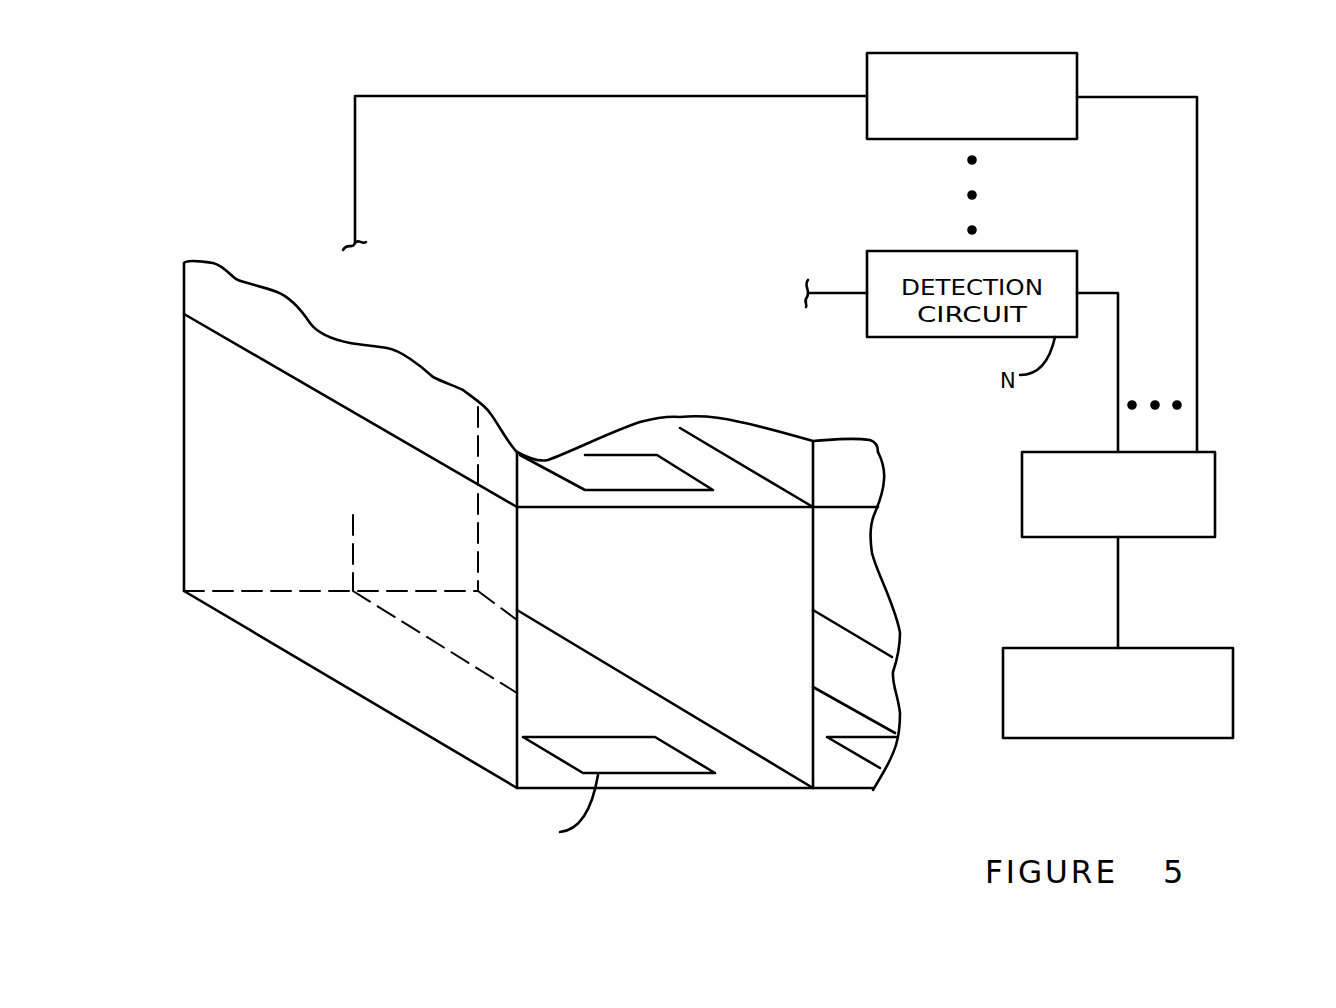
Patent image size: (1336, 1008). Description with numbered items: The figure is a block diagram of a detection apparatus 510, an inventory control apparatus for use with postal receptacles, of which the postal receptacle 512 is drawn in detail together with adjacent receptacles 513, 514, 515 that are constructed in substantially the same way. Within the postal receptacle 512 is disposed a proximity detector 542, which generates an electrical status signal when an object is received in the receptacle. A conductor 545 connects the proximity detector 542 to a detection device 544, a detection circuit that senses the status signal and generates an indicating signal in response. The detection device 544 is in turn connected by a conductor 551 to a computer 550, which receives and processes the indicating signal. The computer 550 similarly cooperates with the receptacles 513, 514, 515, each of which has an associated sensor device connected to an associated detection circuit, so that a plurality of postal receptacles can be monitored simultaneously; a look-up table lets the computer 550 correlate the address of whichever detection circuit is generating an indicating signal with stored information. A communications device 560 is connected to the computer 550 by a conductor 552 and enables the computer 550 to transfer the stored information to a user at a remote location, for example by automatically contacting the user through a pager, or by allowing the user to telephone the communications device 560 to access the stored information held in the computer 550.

The detection apparatus 510 is at (248, 184).
The postal receptacle 512 is at (579, 546).
The postal receptacle 513 is at (912, 649).
The postal receptacle 514 is at (680, 398).
The postal receptacle 515 is at (895, 462).
The proximity detector 542 is at (677, 777).
The detection device 544 is at (867, 53).
The conductor 545 is at (620, 95).
The computer 550 is at (1215, 452).
The conductor 551 is at (1197, 214).
The conductor 552 is at (1118, 605).
The communications device 560 is at (1233, 648).